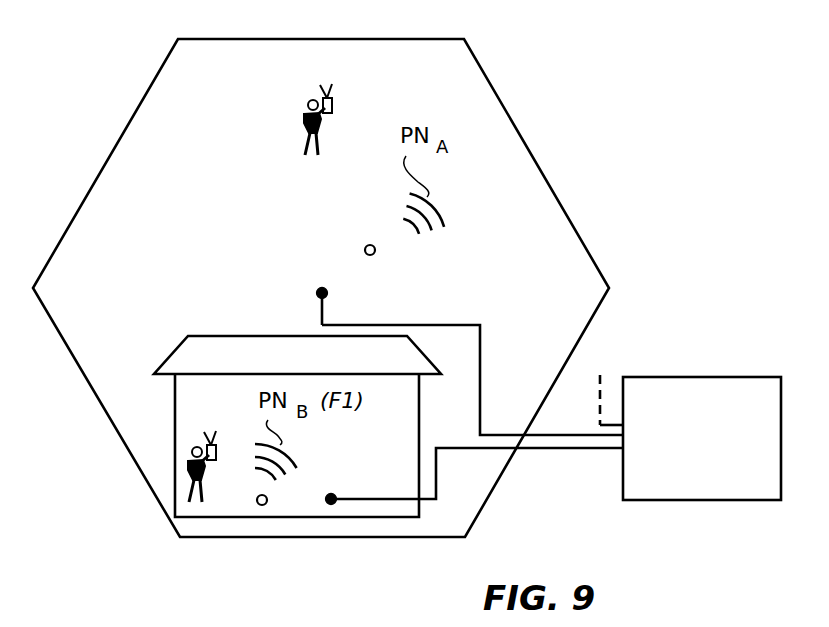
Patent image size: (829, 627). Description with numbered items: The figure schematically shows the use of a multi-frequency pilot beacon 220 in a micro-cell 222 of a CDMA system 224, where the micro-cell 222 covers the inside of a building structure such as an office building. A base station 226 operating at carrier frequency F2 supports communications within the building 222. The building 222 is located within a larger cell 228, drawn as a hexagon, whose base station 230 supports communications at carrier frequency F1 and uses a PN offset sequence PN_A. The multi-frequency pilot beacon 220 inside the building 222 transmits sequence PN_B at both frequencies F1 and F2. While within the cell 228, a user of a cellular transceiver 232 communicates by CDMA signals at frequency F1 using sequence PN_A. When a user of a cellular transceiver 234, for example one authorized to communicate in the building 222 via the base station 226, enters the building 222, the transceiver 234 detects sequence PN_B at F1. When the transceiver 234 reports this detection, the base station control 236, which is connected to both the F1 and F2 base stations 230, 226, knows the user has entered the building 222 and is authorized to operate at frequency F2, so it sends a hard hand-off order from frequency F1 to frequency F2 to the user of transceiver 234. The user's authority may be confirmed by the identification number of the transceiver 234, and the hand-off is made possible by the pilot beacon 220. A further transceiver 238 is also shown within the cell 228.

The multi-frequency pilot beacon 220 is at (258, 505).
The micro-cell 222 is at (177, 343).
The CDMA system 224 is at (655, 138).
The base station 226 is at (333, 505).
The cell 228 is at (100, 172).
The base station 230 is at (322, 288).
The cellular transceiver 232 is at (304, 118).
The cellular transceiver 234 is at (195, 490).
The base station control 236 is at (688, 377).
The mobile station 238 is at (376, 252).